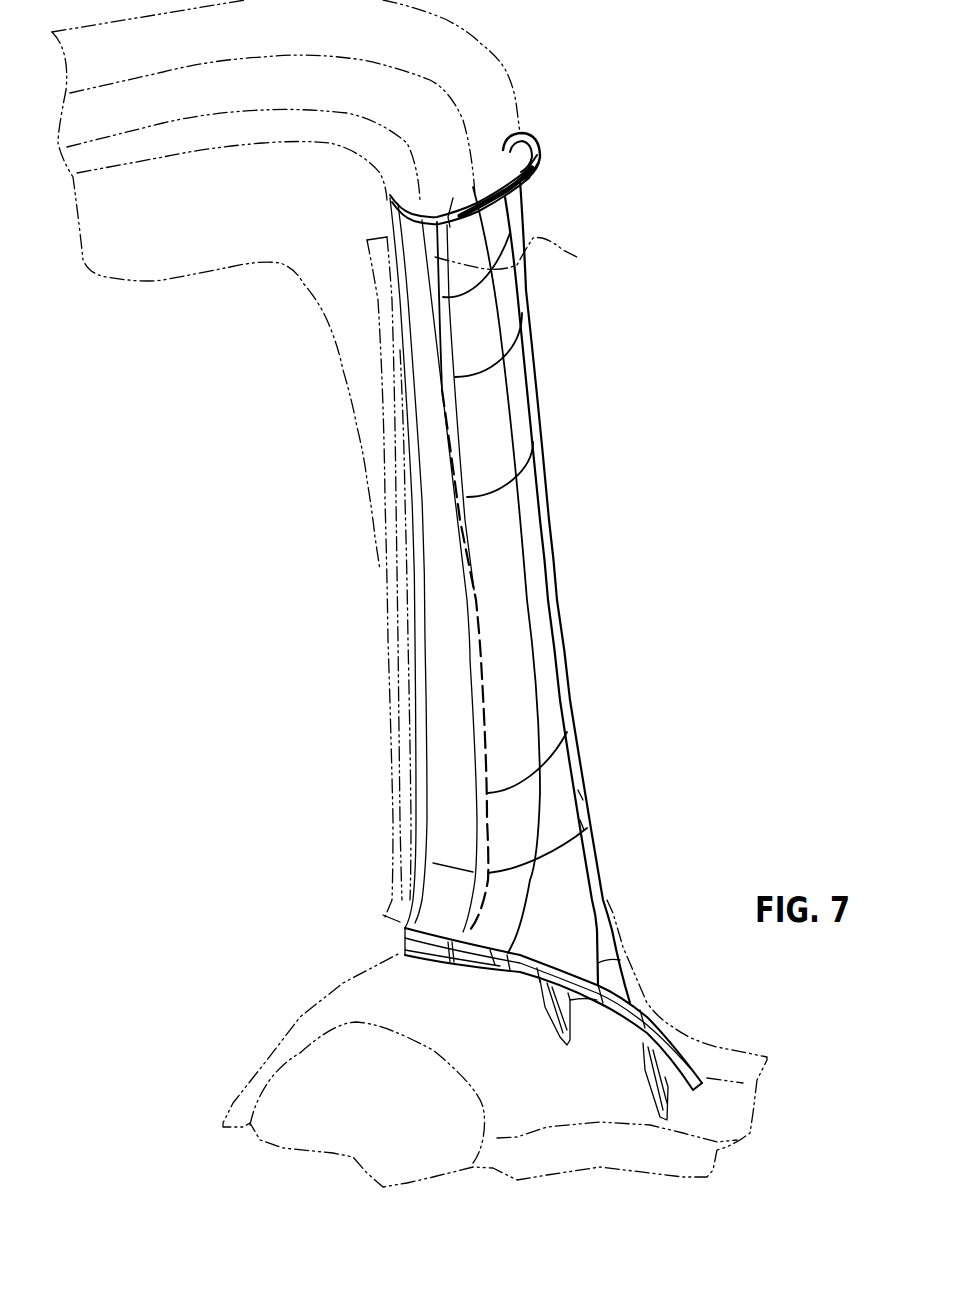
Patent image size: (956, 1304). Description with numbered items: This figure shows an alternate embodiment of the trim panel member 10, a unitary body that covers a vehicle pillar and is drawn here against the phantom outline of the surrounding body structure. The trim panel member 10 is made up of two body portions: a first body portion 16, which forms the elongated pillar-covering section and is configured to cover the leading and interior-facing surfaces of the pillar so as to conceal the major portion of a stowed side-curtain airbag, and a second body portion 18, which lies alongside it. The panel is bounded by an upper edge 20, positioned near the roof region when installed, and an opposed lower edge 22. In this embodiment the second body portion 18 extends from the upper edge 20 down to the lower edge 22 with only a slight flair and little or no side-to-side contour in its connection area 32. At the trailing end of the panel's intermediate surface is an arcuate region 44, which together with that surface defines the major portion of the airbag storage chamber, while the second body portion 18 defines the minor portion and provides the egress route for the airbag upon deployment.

The trim panel member 10 is at (684, 650).
The first body portion 16 is at (545, 513).
The second body portion 18 is at (432, 552).
The upper edge 20 is at (505, 137).
The lower edge 22 is at (452, 962).
The connection area 32 is at (521, 254).
The arcuate region 44 is at (537, 165).